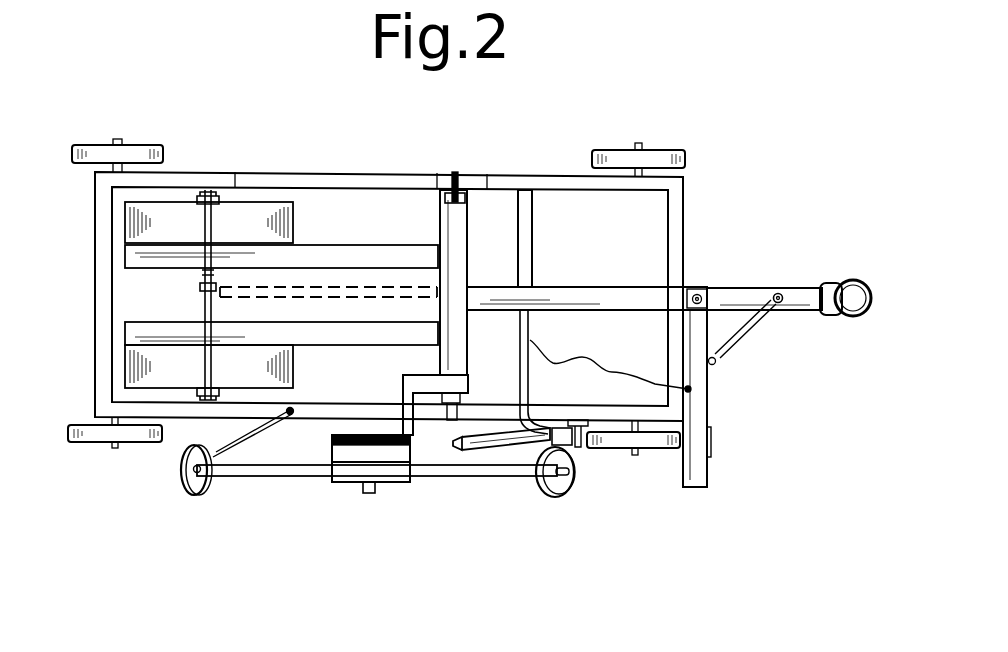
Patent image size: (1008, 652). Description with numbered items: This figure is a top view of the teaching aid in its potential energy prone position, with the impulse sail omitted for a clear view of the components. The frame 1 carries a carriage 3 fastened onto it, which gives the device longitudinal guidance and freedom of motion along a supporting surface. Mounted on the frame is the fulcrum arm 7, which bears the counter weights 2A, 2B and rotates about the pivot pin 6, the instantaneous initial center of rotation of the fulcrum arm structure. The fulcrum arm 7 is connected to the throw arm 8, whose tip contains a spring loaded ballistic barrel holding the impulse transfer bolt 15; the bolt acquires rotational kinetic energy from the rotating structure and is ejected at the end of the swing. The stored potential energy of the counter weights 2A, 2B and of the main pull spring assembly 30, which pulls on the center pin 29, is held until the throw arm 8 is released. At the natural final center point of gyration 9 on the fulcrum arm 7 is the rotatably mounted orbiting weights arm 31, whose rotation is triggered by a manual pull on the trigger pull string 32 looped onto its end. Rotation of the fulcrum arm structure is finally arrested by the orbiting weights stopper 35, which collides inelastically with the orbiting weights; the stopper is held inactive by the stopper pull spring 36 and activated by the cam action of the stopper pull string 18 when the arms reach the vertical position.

The frame 1 is at (340, 172).
The counter weight 2A is at (172, 365).
The counter weight 2B is at (165, 215).
The carriage 3 is at (683, 217).
The pivot pin 6 is at (455, 174).
The fulcrum arm 7 is at (330, 350).
The throw arm 8 is at (635, 292).
The natural final center point of gyration 9 is at (369, 494).
The impulse transfer bolt 15 is at (853, 300).
The stopper pull string 18 is at (623, 367).
The center pin 29 is at (210, 398).
The main pull spring assembly 30 is at (370, 287).
The orbiting weights arm 31 is at (476, 477).
The manual trigger pull string 32 is at (177, 483).
The orbiting weights stopper 35 is at (707, 475).
The stopper pull spring 36 is at (740, 343).